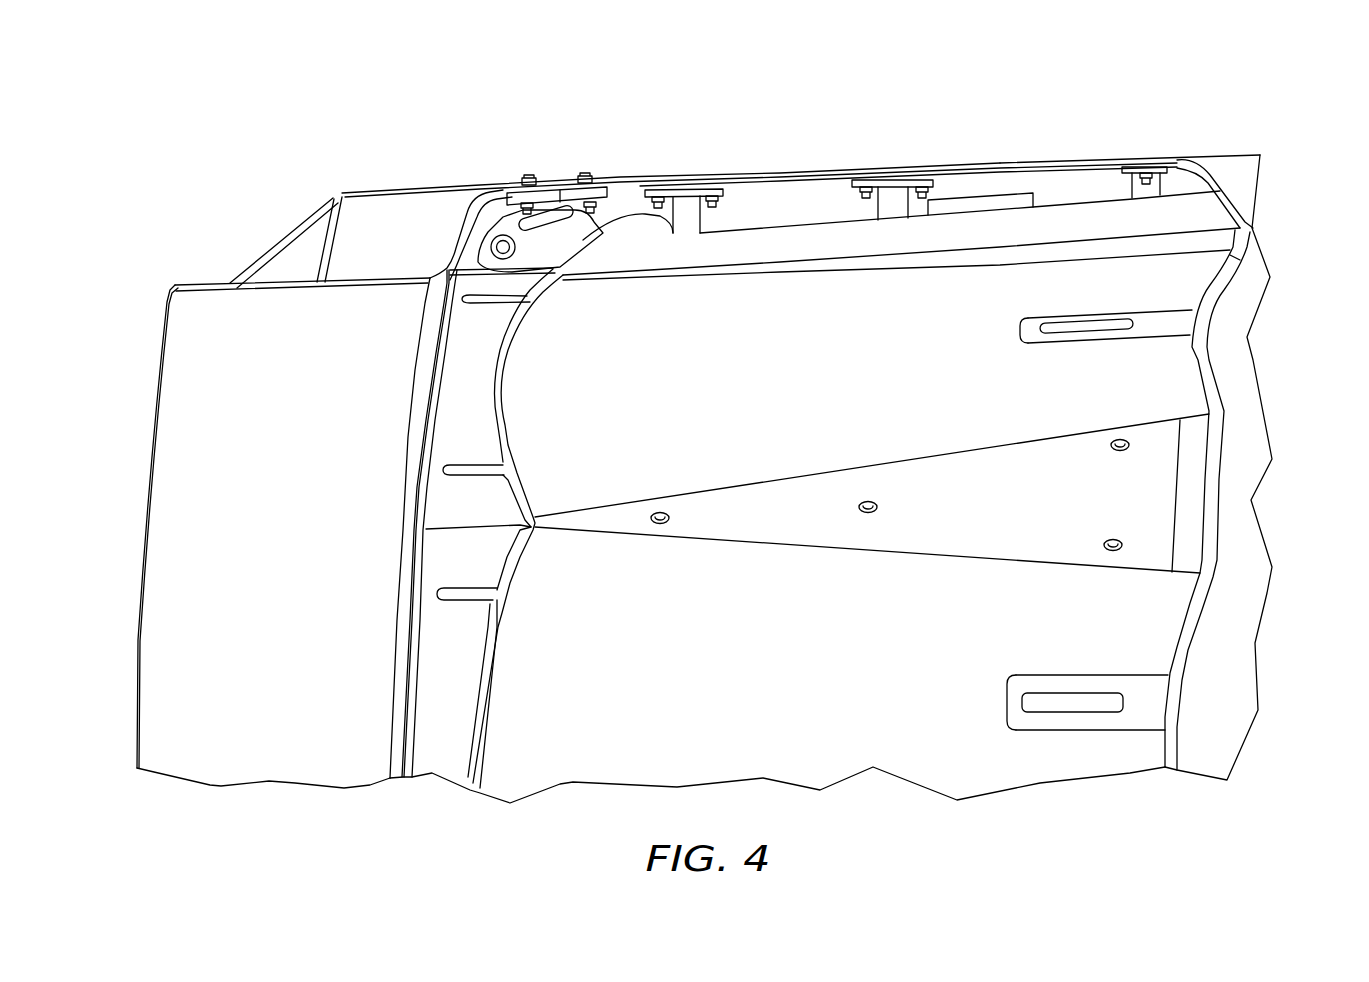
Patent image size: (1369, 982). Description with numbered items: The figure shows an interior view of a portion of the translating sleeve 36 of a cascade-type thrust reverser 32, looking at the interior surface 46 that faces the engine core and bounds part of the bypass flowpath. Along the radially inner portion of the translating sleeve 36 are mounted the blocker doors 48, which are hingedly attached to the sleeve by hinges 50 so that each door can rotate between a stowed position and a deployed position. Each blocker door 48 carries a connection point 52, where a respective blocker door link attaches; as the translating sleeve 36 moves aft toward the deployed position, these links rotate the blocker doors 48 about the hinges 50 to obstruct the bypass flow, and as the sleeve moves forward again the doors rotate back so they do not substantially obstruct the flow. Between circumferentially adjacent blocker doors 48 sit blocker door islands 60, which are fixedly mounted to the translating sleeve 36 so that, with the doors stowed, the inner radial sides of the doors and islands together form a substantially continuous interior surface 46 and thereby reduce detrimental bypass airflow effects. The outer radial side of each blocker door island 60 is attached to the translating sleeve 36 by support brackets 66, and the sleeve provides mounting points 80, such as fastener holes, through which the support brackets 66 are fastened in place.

The thrust reverser 32 is at (1266, 128).
The translating sleeve 36 is at (430, 142).
The interior surface 46 is at (342, 733).
The blocker doors 48 is at (822, 307).
The hinges 50 is at (555, 220).
The connection point 52 is at (1090, 313).
The blocker door islands 60 is at (1182, 217).
The support brackets 66 is at (690, 212).
The mounting points 80 is at (684, 173).